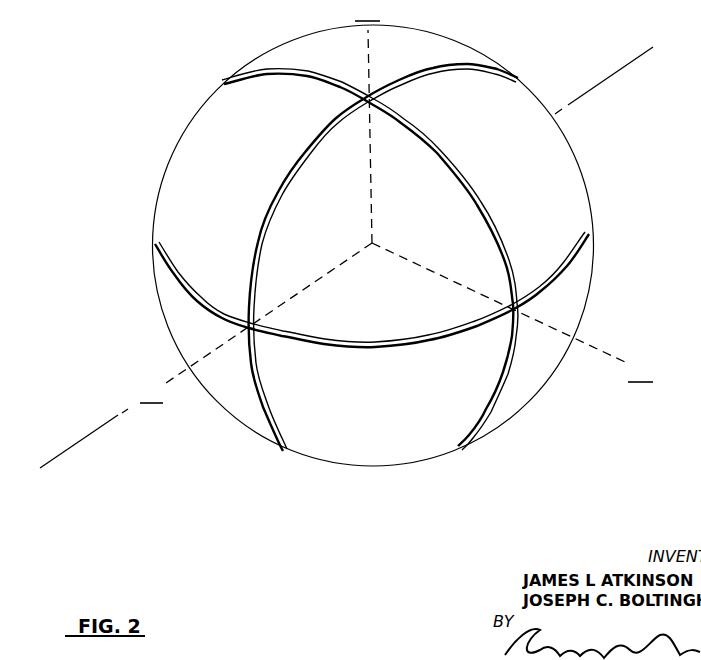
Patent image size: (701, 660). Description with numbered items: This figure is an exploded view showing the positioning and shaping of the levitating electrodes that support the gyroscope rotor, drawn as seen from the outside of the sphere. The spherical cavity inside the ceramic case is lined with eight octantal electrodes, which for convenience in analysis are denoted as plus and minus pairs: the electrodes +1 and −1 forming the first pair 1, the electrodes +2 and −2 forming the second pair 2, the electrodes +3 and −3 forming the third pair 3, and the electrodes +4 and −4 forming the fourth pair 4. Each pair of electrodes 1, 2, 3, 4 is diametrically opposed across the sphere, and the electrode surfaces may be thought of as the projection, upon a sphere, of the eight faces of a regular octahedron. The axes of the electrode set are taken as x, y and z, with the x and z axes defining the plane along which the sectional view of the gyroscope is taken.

The octantal electrode pair 1 is at (64, 392).
The octantal electrode pair 2 is at (372, 271).
The octantal electrode pair 3 is at (353, 228).
The octantal electrode pair 4 is at (354, 242).